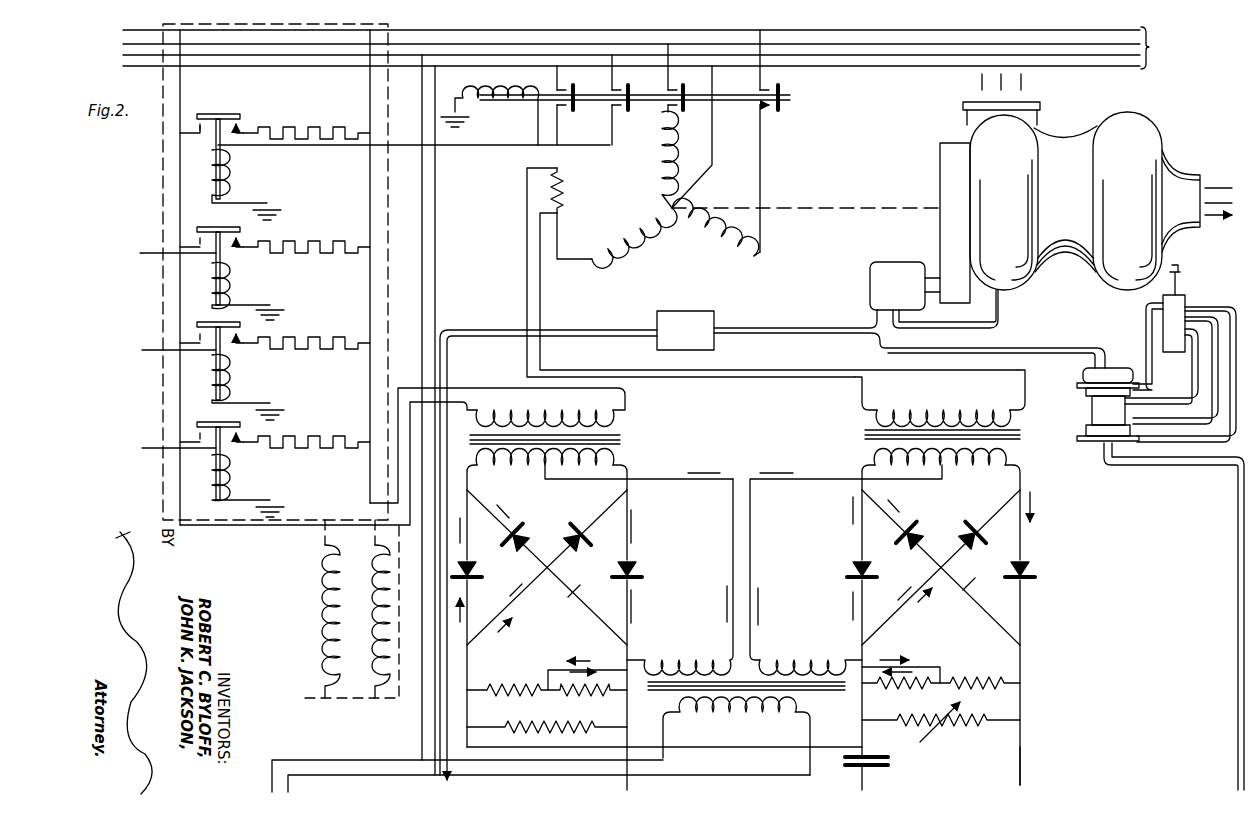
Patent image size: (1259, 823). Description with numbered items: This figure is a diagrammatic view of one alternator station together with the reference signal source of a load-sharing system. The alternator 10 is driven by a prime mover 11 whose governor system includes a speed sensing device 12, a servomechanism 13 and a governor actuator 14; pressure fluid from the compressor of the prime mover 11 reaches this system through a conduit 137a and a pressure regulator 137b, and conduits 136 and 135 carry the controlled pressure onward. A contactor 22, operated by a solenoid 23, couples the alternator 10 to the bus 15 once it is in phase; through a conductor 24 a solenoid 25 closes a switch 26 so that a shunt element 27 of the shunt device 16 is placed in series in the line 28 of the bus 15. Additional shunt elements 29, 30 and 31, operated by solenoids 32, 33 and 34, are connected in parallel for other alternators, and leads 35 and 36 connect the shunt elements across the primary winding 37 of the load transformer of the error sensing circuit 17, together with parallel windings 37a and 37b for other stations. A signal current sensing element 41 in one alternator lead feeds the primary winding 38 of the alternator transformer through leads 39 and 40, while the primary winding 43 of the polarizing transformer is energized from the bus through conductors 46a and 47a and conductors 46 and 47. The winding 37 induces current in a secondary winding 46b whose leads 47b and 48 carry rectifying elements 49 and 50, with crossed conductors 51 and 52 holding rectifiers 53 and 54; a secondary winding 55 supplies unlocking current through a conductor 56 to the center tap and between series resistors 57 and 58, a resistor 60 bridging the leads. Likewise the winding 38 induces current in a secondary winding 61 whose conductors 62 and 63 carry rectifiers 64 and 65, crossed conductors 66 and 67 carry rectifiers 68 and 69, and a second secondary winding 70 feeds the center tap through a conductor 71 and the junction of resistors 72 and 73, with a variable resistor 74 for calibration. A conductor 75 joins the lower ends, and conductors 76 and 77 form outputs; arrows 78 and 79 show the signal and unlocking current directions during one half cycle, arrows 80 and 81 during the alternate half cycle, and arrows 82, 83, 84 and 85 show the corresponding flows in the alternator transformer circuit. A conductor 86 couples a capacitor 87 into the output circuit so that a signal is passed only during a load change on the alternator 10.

The alternator 10 is at (716, 198).
The prime mover 11 is at (1172, 152).
The speed sensing device 12 is at (895, 261).
The servomechanism 13 is at (1113, 366).
The governor actuator 14 is at (1189, 300).
The bus 15 is at (646, 48).
The shunt device 16 is at (158, 170).
The error sensing circuit 17 is at (644, 440).
The contactor 22 is at (786, 96).
The solenoid 23 is at (508, 92).
The conductor 24 is at (470, 146).
The solenoid 25 is at (227, 182).
The switch 26 is at (221, 114).
The shunt element 27 is at (330, 126).
The line 28 is at (520, 29).
The shunt element 29 is at (319, 238).
The shunt element 30 is at (350, 333).
The shunt element 31 is at (350, 433).
The solenoid 32 is at (227, 291).
The solenoid 33 is at (230, 385).
The solenoid 34 is at (230, 485).
The lead 35 is at (467, 389).
The lead 36 is at (465, 402).
The primary winding 37 is at (578, 410).
The primary winding 37a is at (375, 555).
The primary winding 37b is at (325, 555).
The primary winding 38 is at (950, 408).
The lead 39 is at (540, 290).
The lead 40 is at (527, 198).
The signal current sensing element 41 is at (561, 194).
The primary winding 43 is at (710, 714).
The conductor 46 is at (435, 283).
The conductor 46a is at (663, 757).
The secondary winding 46b is at (525, 479).
The conductor 47 is at (421, 274).
The conductor 47a is at (762, 775).
The lead 47b is at (634, 506).
The lead 48 is at (474, 491).
The rectifying element 49 is at (636, 571).
The rectifying element 50 is at (477, 575).
The crossed conductor 51 is at (530, 592).
The crossed conductor 52 is at (587, 612).
The rectifying element 53 is at (590, 523).
The rectifying element 54 is at (524, 533).
The secondary winding 55 is at (713, 659).
The conductor 56 is at (733, 533).
The resistor 57 is at (593, 696).
The resistor 58 is at (522, 680).
The resistor 60 is at (565, 720).
The secondary winding 61 is at (963, 467).
The conductor 62 is at (1022, 541).
The conductor 63 is at (862, 544).
The rectifying element 64 is at (1034, 563).
The rectifying element 65 is at (896, 539).
The crossed conductor 66 is at (898, 612).
The crossed conductor 67 is at (1016, 632).
The rectifying element 68 is at (974, 536).
The rectifying element 69 is at (921, 527).
The secondary winding 70 is at (805, 662).
The conductor 71 is at (751, 540).
The resistor 72 is at (993, 697).
The resistor 73 is at (899, 707).
The variable resistor 74 is at (971, 735).
The conductor 75 is at (792, 748).
The conductor 76 is at (627, 788).
The conductor 77 is at (1020, 765).
The arrows 78 is at (507, 512).
The arrows 79 is at (510, 592).
The arrows 80 is at (636, 536).
The arrows 81 is at (468, 538).
The arrows 82 is at (893, 507).
The arrows 83 is at (774, 470).
The arrows 84 is at (853, 596).
The arrows 85 is at (854, 515).
The conductor 86 is at (863, 758).
The capacitor 87 is at (890, 765).
The conduit 135 is at (1238, 533).
The conduit 136 is at (447, 670).
The conduit 137a is at (811, 326).
The pressure regulator 137b is at (657, 313).